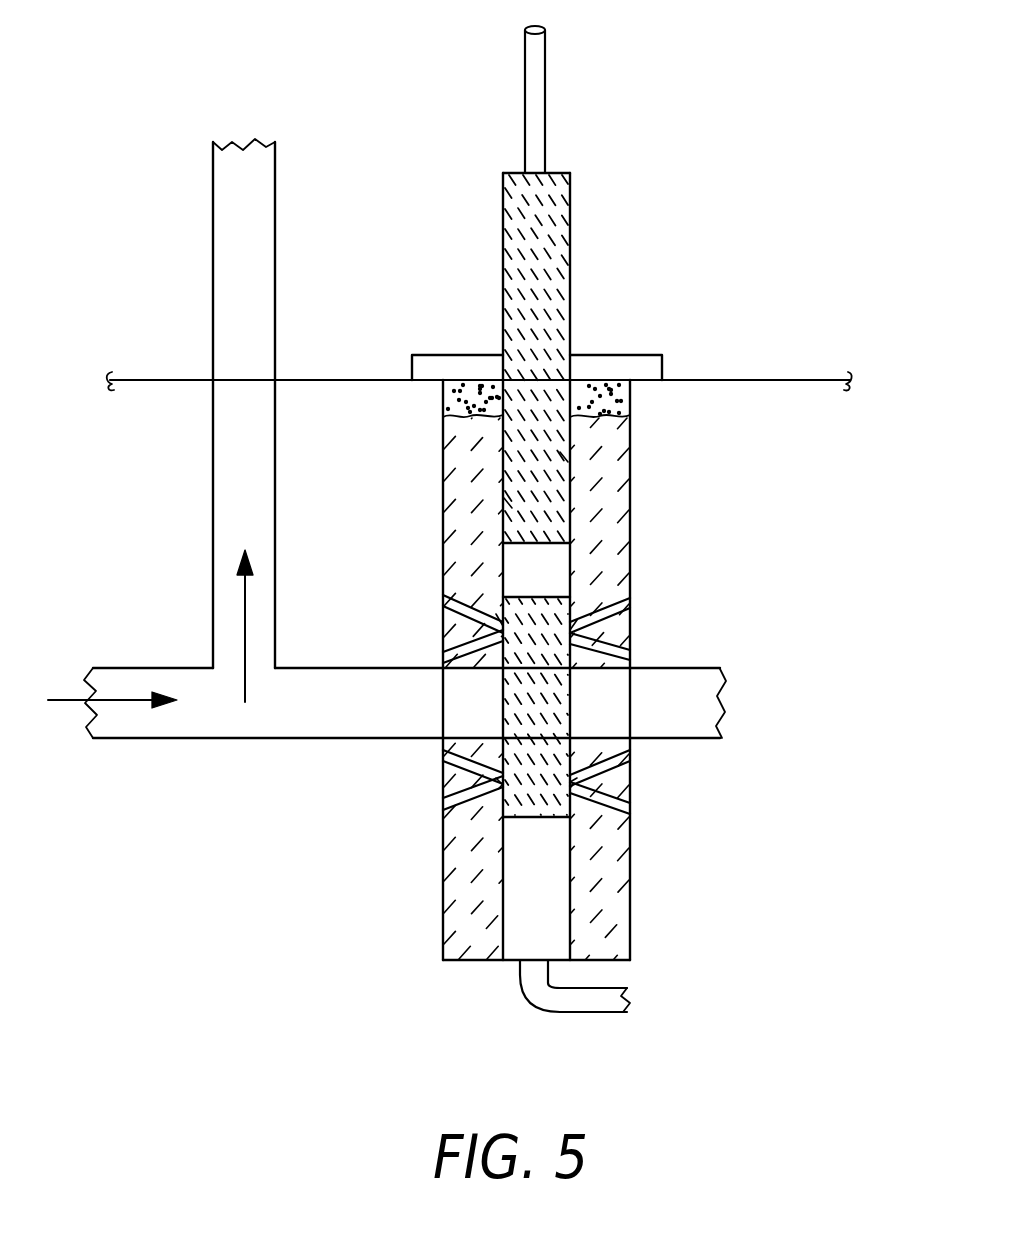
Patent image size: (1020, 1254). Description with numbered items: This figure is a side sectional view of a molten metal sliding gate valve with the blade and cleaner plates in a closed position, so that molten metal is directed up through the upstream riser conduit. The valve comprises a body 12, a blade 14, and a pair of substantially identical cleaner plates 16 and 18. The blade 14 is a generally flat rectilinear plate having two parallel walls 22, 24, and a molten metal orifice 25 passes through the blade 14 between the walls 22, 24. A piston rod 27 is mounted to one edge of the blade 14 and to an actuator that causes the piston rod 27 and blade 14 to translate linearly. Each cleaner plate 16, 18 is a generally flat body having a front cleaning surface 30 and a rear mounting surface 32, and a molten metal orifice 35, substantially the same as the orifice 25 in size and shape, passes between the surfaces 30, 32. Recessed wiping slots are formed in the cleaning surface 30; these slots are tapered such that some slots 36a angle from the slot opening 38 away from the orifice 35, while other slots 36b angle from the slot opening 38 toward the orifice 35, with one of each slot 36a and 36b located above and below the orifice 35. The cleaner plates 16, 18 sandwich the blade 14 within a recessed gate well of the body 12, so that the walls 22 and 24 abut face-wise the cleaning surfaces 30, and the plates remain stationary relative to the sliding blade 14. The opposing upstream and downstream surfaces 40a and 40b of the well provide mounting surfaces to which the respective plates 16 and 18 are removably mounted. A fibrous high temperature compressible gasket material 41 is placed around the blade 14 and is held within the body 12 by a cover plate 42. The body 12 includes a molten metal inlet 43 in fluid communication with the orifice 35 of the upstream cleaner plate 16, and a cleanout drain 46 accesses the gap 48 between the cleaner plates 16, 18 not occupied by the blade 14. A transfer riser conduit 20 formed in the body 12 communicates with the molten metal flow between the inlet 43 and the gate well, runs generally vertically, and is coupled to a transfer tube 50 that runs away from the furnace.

The body 12 is at (705, 392).
The blade 14 is at (572, 190).
The cleaner plate 16 is at (445, 482).
The cleaner plate 18 is at (606, 537).
The riser conduit 20 is at (232, 493).
The wall 22 is at (503, 227).
The wall 24 is at (570, 229).
The molten metal orifice 25 is at (548, 578).
The piston rod 27 is at (538, 63).
The cleaning surface 30 is at (504, 498).
The rear mounting surface 32 is at (443, 932).
The molten metal orifice 35 is at (487, 719).
The cleaning slot 36a is at (632, 604).
The cleaning slot 36b is at (632, 648).
The slot opening 38 is at (585, 637).
The upstream surface 40a is at (443, 880).
The downstream surface 40b is at (625, 835).
The gasket material 41 is at (592, 380).
The cover plate 42 is at (443, 356).
The molten metal inlet 43 is at (102, 717).
The cleanout drain 46 is at (588, 1003).
The gap 48 is at (550, 895).
The transfer tube 50 is at (213, 224).